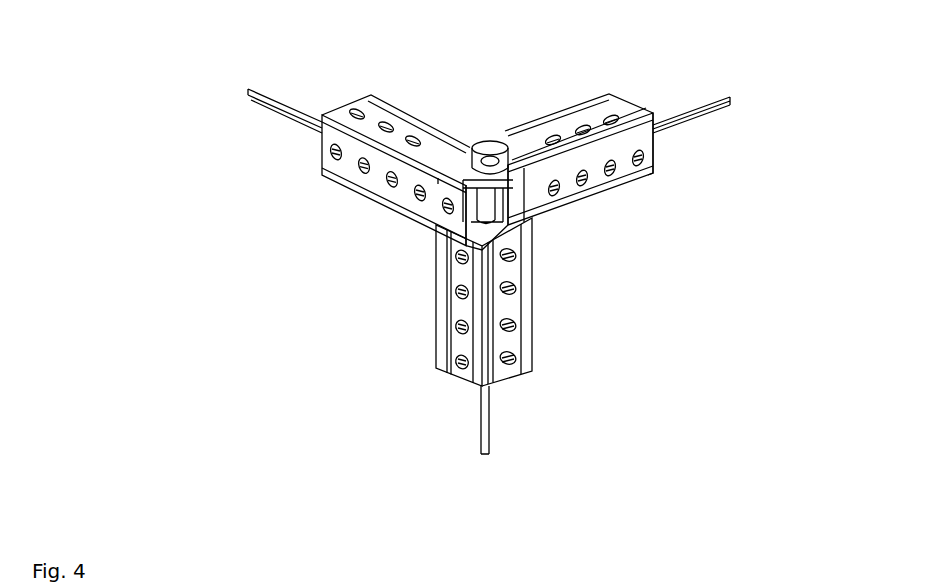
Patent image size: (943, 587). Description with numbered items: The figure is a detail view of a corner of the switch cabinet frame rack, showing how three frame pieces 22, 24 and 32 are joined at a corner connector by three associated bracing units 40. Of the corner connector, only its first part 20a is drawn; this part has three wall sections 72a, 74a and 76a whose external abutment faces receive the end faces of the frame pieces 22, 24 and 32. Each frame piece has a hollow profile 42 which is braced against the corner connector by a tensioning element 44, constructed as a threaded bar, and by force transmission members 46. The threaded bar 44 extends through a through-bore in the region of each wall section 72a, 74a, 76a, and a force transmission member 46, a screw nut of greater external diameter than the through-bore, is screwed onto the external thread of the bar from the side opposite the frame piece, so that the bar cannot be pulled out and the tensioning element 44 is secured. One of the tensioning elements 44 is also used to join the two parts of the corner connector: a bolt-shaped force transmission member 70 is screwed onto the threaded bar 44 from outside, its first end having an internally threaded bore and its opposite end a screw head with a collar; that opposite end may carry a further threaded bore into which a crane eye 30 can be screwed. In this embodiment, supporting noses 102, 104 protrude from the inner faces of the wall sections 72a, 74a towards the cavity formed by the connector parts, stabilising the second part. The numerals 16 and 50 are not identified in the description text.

The connector 16 is at (445, 218).
The first part of the corner connector 20a is at (527, 253).
The frame piece 22 is at (338, 88).
The frame piece 24 is at (583, 85).
The crane eye 30 is at (537, 576).
The frame piece 32 is at (535, 382).
The bracing unit 40 is at (656, 99).
The hollow profile 42 is at (644, 176).
The tensioning element 44 is at (253, 93).
The force transmission member 46 is at (515, 210).
The post flange 50 is at (455, 311).
The force transmission member 70 is at (510, 142).
The wall section 72a is at (448, 172).
The wall section 74a is at (497, 230).
The wall section 76a is at (472, 262).
The supporting nose 102 is at (447, 248).
The supporting nose 104 is at (500, 212).